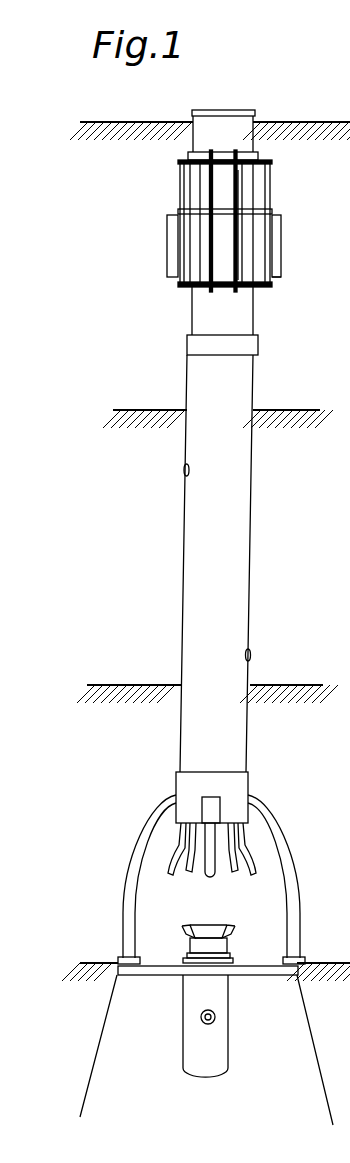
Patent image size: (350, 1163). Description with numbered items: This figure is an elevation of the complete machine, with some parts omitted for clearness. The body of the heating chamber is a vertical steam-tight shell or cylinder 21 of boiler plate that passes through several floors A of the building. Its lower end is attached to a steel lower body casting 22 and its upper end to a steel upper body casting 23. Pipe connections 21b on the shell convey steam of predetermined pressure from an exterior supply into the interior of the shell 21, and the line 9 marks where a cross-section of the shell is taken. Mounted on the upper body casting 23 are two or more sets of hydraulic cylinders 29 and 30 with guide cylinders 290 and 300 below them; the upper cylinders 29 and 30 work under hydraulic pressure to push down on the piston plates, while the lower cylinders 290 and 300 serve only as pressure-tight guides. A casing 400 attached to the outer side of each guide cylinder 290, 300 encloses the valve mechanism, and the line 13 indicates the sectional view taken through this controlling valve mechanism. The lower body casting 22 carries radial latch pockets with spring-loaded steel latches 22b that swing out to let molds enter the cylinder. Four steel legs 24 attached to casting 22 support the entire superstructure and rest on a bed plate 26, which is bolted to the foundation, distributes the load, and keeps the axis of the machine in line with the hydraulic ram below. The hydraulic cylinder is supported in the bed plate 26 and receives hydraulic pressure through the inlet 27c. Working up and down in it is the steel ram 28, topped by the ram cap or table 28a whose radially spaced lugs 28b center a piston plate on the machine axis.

The section line 13— 13 is at (237, 160).
The hydraulic cylinder 29 is at (222, 186).
The hydraulic cylinder 30 is at (243, 185).
The guide cylinder 290 is at (222, 250).
The guide cylinder 300 is at (245, 247).
The casing 400 is at (280, 268).
The upper body casting 23 is at (202, 313).
The shell or cylinder 21 is at (243, 518).
The pipe connection 21b is at (183, 468).
The floor A is at (298, 455).
The section line 9— 9 is at (162, 591).
The lower body casting 22 is at (237, 783).
The legs 24 is at (288, 878).
The latch 22b is at (223, 888).
The ram 28 is at (225, 947).
The ram cap or table 28a is at (232, 927).
The spacing lugs 28b is at (185, 928).
The bed plate 26 is at (268, 978).
The inlet 27c is at (213, 1022).